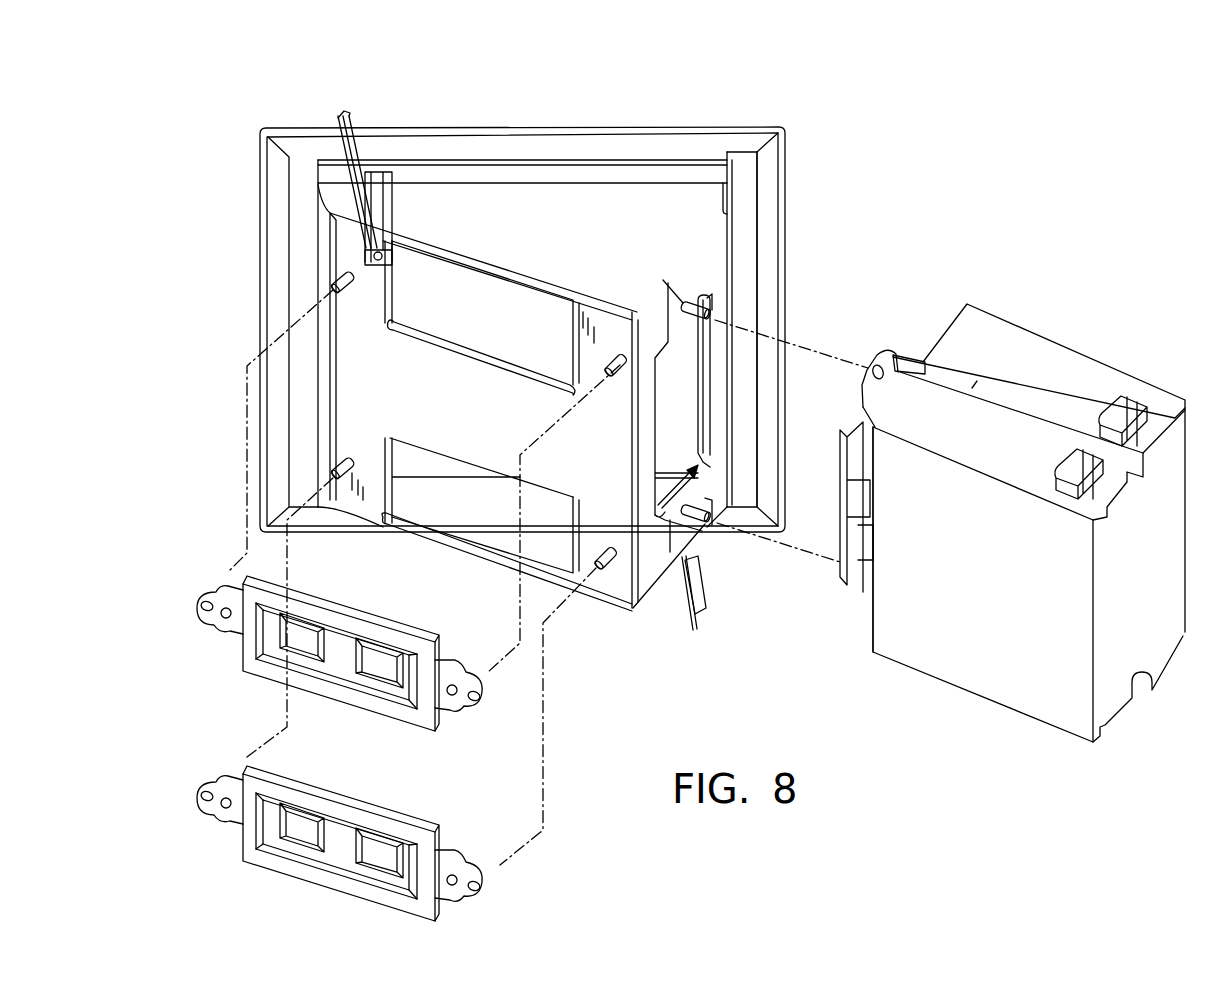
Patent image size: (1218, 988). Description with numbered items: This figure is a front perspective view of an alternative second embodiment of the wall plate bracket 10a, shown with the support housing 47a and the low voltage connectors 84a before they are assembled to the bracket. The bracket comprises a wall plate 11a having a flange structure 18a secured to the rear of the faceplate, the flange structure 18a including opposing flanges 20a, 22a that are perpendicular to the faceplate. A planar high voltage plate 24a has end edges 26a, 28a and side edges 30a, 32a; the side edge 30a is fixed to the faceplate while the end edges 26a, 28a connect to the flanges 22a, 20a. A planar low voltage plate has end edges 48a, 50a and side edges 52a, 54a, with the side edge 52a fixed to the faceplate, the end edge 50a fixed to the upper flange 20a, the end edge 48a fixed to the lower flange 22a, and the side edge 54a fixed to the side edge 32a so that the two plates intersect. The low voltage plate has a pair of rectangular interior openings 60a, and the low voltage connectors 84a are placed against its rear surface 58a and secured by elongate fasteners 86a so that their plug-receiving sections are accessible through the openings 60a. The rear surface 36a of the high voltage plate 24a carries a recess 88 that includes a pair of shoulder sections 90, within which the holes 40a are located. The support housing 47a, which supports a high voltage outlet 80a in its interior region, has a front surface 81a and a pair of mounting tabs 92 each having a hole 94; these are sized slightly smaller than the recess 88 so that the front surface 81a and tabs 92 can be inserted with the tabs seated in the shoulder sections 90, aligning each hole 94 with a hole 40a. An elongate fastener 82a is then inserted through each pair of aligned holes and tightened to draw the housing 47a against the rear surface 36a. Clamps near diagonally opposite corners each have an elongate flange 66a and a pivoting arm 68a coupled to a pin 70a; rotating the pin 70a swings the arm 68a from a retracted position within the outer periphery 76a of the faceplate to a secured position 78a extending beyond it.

The wall plate bracket 10a is at (657, 122).
The wall plate 11a is at (575, 122).
The flange structure 18a is at (484, 225).
The flange 20a is at (526, 226).
The flange 22a is at (423, 503).
The high voltage plate 24a is at (718, 246).
The end edge 26a is at (715, 226).
The end edge 28a is at (645, 568).
The side edge 30a is at (727, 280).
The side edge 32a is at (637, 448).
The rear surface 36a is at (673, 580).
The hole 40a is at (700, 298).
The support housing 47a is at (1030, 690).
The end edge 48a is at (553, 290).
The end edge 50a is at (445, 545).
The side edge 52a is at (316, 376).
The side edge 54a is at (650, 403).
The rear surface 58a is at (372, 420).
The interior opening 60a is at (543, 367).
The flange 66a is at (377, 168).
The arm 68a is at (340, 146).
The pin 70a is at (378, 267).
The outer periphery 76a is at (266, 320).
The secured position 78a is at (343, 112).
The high voltage outlet 80a is at (838, 483).
The front surface 81a is at (872, 617).
The elongate fastener 82a is at (683, 300).
The low voltage connector 84a is at (350, 707).
The fastener 86a is at (338, 277).
The recess 88 is at (696, 458).
The shoulder section 90 is at (688, 303).
The mounting tab 92 is at (890, 348).
The hole 94 is at (876, 350).